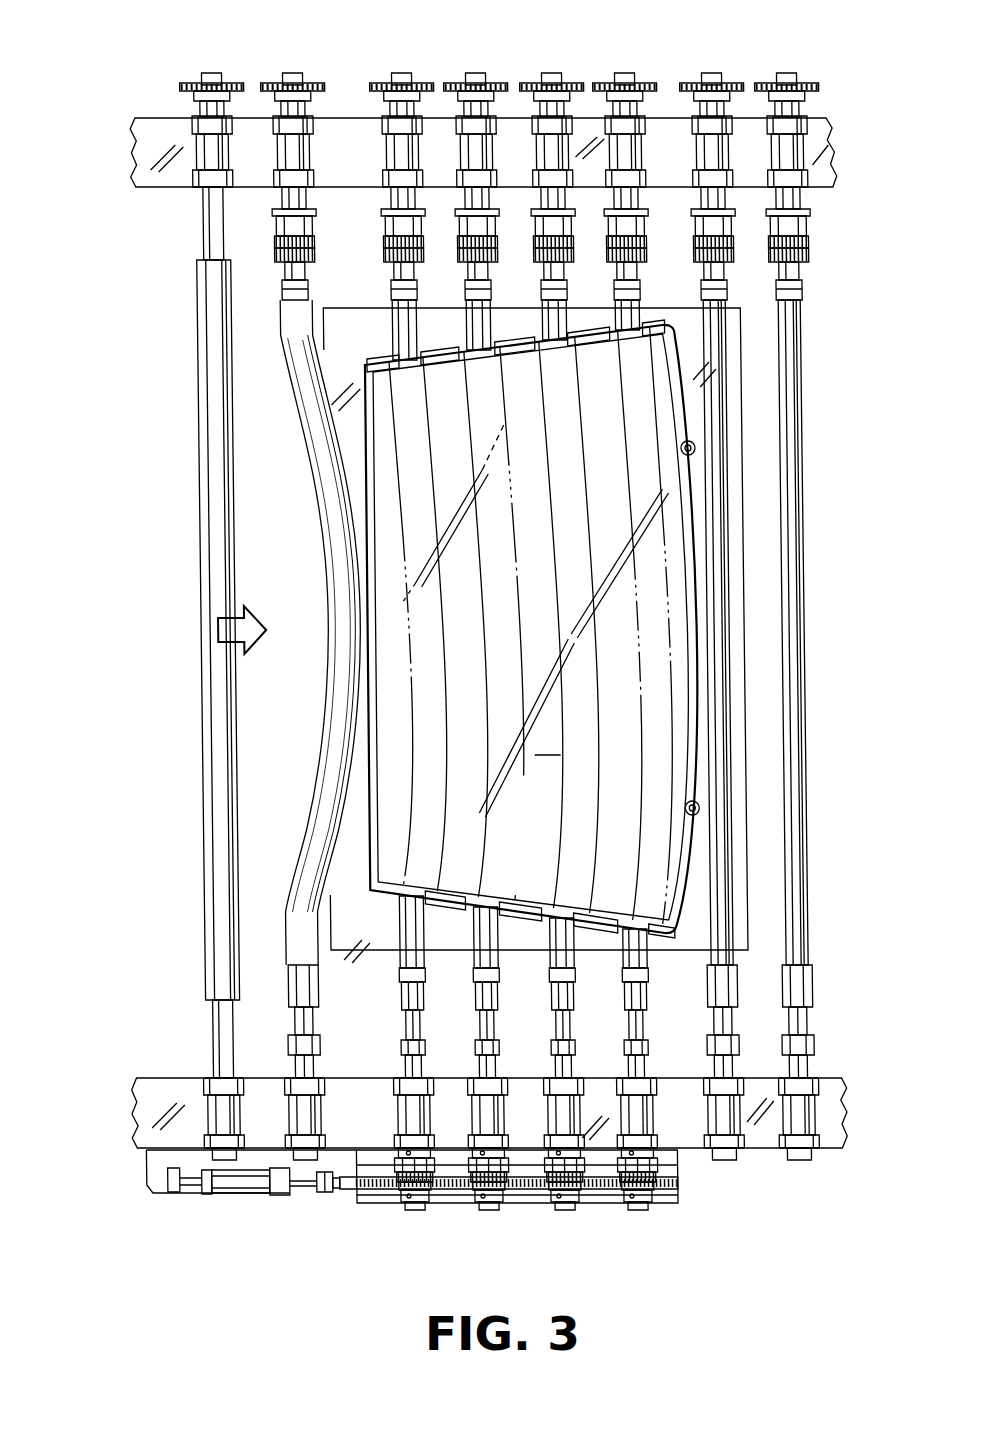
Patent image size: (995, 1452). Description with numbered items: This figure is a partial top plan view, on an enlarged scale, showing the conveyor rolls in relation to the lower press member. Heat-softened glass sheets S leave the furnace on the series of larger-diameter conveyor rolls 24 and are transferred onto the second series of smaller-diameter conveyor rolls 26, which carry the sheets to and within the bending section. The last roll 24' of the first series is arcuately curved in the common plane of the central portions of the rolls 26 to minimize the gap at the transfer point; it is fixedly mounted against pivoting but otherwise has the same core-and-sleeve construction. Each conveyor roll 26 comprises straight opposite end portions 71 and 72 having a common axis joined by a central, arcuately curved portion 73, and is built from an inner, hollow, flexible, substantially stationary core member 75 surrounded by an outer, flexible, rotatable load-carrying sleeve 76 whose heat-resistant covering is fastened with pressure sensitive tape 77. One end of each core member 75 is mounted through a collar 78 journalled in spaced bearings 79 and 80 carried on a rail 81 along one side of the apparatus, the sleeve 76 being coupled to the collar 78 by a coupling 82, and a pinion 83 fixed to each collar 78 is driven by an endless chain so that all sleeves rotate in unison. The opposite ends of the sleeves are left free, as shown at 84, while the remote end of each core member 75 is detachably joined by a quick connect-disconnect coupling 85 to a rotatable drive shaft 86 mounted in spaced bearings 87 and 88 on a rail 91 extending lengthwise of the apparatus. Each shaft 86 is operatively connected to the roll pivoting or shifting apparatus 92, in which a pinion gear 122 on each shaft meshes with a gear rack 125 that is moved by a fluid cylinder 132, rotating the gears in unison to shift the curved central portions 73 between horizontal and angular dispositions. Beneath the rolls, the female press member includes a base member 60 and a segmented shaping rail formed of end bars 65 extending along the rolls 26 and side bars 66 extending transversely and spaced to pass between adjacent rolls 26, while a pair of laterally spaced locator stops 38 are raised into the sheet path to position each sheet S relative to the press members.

The rail 81 is at (140, 155).
The rail 91 is at (132, 1105).
The bearing 80 is at (382, 118).
The pinion 83 is at (460, 86).
The bearing 79 is at (382, 178).
The collar 78 is at (392, 198).
The coupling 82 is at (383, 232).
The pressure sensitive tape 77 is at (415, 290).
The conveyor rolls 26 is at (376, 318).
The straight end portion 71 is at (464, 343).
The straight end portion 72 is at (437, 940).
The conveyor rolls 24 is at (205, 632).
The last roll 24' is at (313, 689).
The base member 60 is at (745, 514).
The end bars 65 is at (682, 853).
The glass sheet S is at (532, 627).
The central arcuately curved portion 73 is at (492, 660).
The side bars 66 is at (430, 360).
The locator stops 38 is at (691, 448).
The outer sleeve 76 is at (541, 995).
The free end of sleeve member 84 is at (395, 1012).
The core member 75 is at (469, 1020).
The quick connect-disconnect coupling 85 is at (390, 1047).
The drive shaft 86 is at (410, 1070).
The bearing 87 is at (367, 1078).
The bearing 88 is at (382, 1139).
The roll pivoting or shifting apparatus 92 is at (440, 1212).
The pinion gear 122 is at (384, 1190).
The gear rack 125 is at (335, 1196).
The fluid cylinder 132 is at (228, 1193).